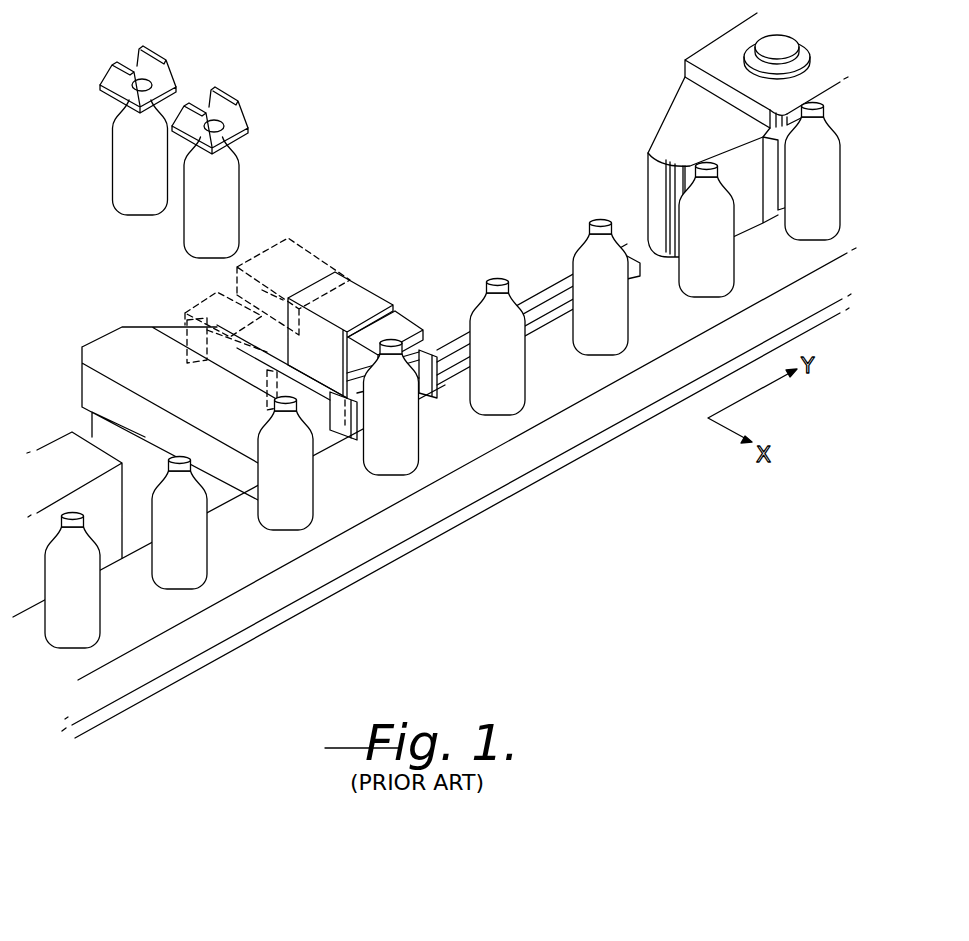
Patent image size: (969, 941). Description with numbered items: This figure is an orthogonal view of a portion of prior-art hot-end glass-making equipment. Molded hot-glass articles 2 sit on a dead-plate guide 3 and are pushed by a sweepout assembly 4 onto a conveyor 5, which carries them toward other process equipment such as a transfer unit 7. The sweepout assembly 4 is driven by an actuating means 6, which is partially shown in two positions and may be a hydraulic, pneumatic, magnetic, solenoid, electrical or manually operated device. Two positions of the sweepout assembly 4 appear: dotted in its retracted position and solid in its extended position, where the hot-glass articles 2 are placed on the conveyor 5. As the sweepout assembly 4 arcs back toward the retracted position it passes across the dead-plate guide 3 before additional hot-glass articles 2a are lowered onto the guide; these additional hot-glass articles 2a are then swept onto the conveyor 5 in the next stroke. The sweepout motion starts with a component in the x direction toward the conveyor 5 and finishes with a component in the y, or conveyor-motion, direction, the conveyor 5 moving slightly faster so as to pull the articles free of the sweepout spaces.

The hot-glass articles 2 is at (478, 298).
The additional hot-glass articles 2a is at (110, 157).
The dead-plate guide 3 is at (250, 463).
The sweepout assembly 4 is at (423, 345).
The conveyor 5 is at (421, 401).
The actuating means 6 is at (342, 277).
The transfer unit 7 is at (697, 44).